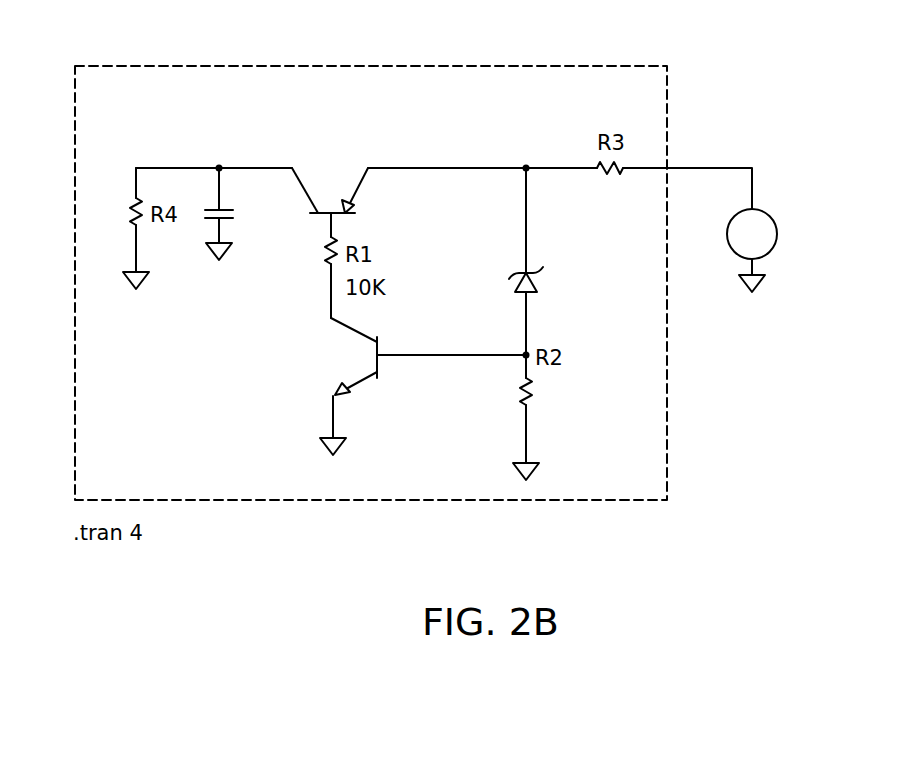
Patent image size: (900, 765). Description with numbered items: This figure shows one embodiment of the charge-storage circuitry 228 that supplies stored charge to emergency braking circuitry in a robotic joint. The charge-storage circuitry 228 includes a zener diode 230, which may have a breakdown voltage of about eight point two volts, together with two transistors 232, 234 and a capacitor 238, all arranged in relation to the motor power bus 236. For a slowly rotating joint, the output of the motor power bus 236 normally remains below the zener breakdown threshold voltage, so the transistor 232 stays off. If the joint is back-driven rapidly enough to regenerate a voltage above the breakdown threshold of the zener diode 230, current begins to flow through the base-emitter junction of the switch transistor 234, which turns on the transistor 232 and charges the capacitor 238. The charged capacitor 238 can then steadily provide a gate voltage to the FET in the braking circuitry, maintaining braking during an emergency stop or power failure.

The charge-storage circuitry 228 is at (405, 66).
The zener diode 230 is at (561, 264).
The transistor 232 is at (320, 142).
The switch transistor 234 is at (378, 377).
The motor power bus 236 is at (790, 233).
The capacitor 238 is at (236, 217).